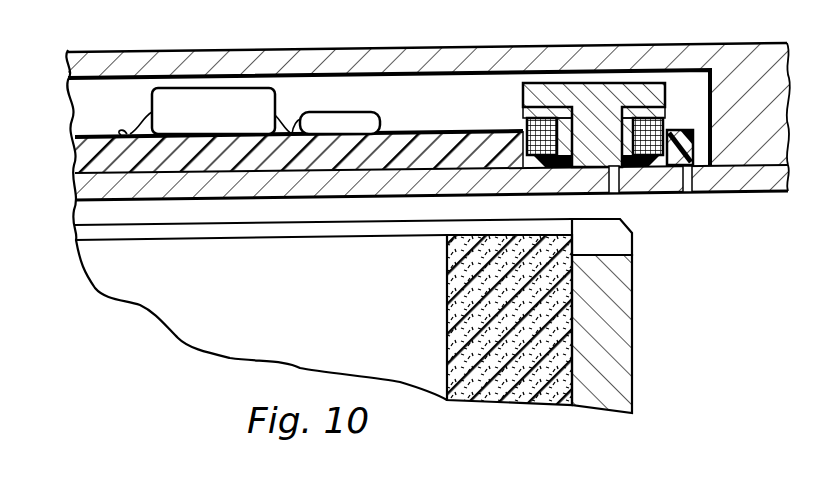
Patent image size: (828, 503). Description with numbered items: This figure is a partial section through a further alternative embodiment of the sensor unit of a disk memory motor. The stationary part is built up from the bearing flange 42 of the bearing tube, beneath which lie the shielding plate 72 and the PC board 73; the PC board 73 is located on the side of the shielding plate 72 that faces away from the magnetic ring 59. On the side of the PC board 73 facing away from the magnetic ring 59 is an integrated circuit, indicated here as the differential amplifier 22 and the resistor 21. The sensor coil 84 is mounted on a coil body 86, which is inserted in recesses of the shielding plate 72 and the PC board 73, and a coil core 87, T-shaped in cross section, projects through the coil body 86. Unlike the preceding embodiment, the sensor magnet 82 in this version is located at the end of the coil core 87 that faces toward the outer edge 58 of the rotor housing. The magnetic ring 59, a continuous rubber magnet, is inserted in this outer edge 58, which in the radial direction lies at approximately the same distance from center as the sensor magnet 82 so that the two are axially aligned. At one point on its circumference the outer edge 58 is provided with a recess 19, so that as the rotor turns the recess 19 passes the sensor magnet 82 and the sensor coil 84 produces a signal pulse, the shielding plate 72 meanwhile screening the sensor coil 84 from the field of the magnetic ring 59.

The recess 19 is at (620, 243).
The resistor 21 is at (346, 118).
The differential amplifier 22 is at (188, 105).
The bearing flange 42 is at (716, 52).
The outer edge 58 is at (620, 347).
The magnetic ring 59 is at (515, 400).
The shielding plate 72 is at (176, 190).
The PC board 73 is at (405, 158).
The sensor magnet 82 is at (613, 194).
The sensor coil 84 is at (527, 128).
The coil body 86 is at (690, 192).
The coil core 87 is at (602, 93).